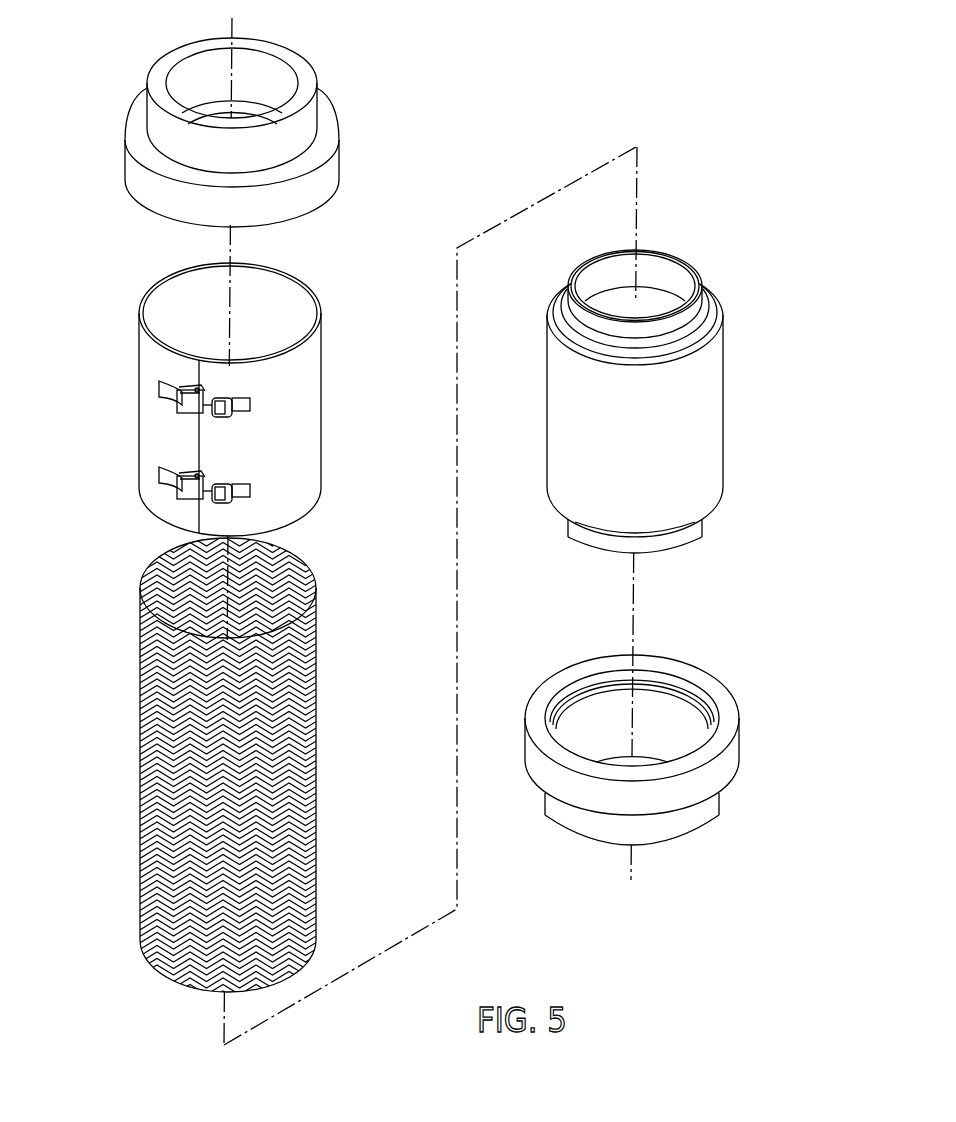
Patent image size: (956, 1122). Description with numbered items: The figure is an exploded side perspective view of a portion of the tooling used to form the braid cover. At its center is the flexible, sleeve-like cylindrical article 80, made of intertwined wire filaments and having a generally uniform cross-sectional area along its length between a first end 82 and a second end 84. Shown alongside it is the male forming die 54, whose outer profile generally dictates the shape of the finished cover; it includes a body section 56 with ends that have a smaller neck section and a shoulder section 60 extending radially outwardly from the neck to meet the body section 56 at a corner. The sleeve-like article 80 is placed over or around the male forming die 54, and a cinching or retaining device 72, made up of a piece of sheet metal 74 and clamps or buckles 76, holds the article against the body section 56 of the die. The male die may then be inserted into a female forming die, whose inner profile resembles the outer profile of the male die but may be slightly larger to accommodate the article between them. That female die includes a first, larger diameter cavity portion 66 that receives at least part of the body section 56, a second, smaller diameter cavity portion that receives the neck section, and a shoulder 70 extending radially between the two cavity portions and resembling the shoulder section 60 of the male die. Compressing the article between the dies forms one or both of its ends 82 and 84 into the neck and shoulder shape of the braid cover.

The male forming die 54 is at (670, 414).
The body section 56 is at (718, 415).
The shoulder section 60 is at (703, 300).
The first cavity portion 66 is at (665, 680).
The shoulder 70 is at (700, 712).
The retaining device 72 is at (203, 399).
The sheet metal 74 is at (310, 413).
The clamps 76 is at (188, 407).
The sleeve-like article 80 is at (192, 768).
The first end 82 is at (142, 628).
The second end 84 is at (140, 903).